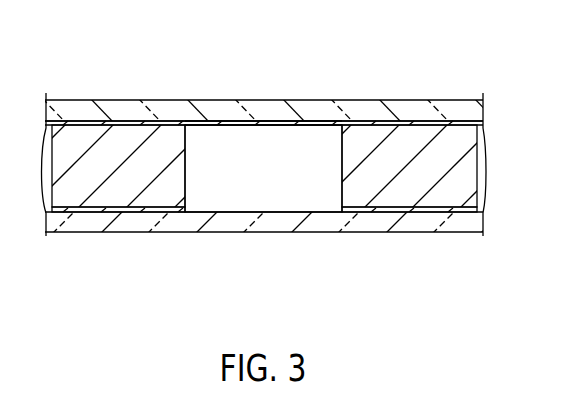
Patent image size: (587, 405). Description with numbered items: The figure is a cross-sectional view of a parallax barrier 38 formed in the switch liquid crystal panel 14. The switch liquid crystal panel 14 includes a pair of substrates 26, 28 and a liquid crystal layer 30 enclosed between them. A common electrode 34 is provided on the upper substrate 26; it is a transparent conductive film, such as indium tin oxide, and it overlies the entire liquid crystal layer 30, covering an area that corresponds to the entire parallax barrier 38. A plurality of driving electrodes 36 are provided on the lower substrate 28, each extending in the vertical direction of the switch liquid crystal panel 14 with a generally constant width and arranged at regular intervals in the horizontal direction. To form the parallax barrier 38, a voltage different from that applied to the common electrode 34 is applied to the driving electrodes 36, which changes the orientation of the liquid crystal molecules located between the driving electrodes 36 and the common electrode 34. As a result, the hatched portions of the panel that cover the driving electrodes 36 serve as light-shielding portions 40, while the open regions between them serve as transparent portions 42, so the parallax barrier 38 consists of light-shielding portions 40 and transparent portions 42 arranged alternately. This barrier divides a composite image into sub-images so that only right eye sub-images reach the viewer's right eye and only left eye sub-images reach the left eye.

The switch liquid crystal panel 14 is at (272, 153).
The substrate 26 is at (442, 116).
The substrate 28 is at (417, 222).
The liquid crystal layer 30 is at (272, 132).
The common electrode 34 is at (137, 121).
The driving electrodes 36 is at (110, 209).
The parallax barrier 38 is at (373, 126).
The light-shielding portions 40 is at (127, 184).
The transparent portions 42 is at (259, 183).